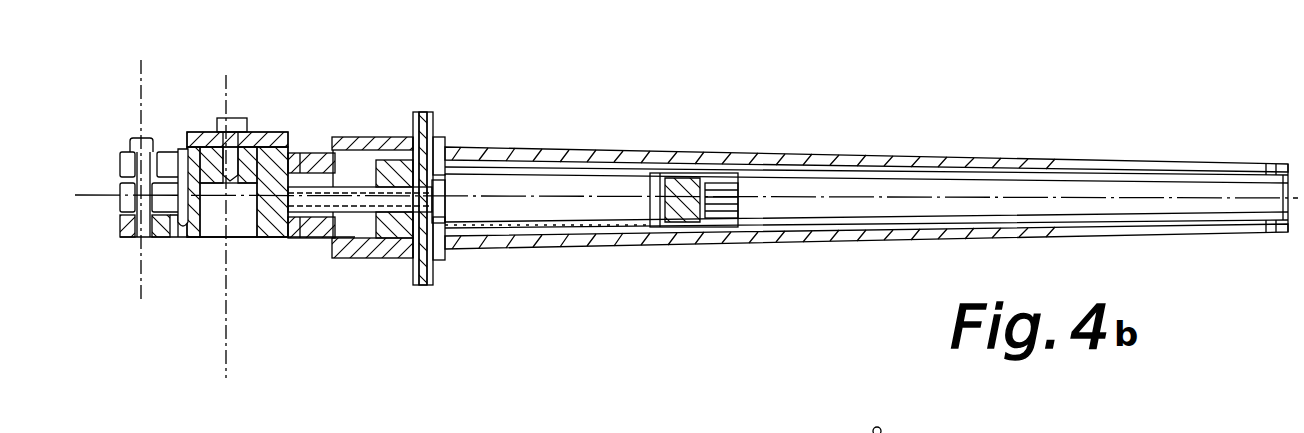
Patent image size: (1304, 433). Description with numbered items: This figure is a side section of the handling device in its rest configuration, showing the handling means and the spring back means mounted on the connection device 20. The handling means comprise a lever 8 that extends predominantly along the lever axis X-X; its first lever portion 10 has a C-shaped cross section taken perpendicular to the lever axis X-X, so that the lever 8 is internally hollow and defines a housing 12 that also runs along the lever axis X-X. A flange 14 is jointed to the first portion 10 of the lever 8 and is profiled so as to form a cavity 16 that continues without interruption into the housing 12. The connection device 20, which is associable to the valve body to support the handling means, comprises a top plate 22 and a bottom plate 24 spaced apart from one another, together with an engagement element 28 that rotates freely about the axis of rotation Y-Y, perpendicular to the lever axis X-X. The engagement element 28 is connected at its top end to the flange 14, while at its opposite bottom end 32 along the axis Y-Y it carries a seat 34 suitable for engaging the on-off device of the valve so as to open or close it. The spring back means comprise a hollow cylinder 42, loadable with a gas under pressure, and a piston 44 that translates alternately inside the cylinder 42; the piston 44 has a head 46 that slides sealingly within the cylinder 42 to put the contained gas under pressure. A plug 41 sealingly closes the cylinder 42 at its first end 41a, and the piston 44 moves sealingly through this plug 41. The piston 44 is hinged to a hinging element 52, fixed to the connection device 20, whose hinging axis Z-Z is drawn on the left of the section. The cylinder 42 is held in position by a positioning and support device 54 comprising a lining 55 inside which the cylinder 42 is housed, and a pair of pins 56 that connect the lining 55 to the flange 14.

The lever 8 is at (896, 146).
The first lever portion 10 is at (917, 249).
The housing 12 is at (778, 188).
The flange 14 is at (351, 134).
The cavity 16 is at (355, 222).
The connection device 20 is at (112, 235).
The top plate 22 is at (310, 153).
The bottom plate 24 is at (303, 230).
The engagement element 28 is at (192, 231).
The bottom end 32 is at (267, 243).
The seat 34 is at (217, 218).
The plug 41 is at (400, 218).
The first end 41a is at (388, 166).
The hollow cylinder 42 is at (543, 229).
The piston 44 is at (304, 152).
The head 46 is at (459, 194).
The hinging element 52 is at (133, 137).
The positioning and support device 54 is at (448, 124).
The lining 55 is at (717, 172).
The pins 56 is at (433, 264).
The lever axis X is at (78, 194).
The axis of rotation Y is at (226, 78).
The hinging axis Z is at (141, 64).